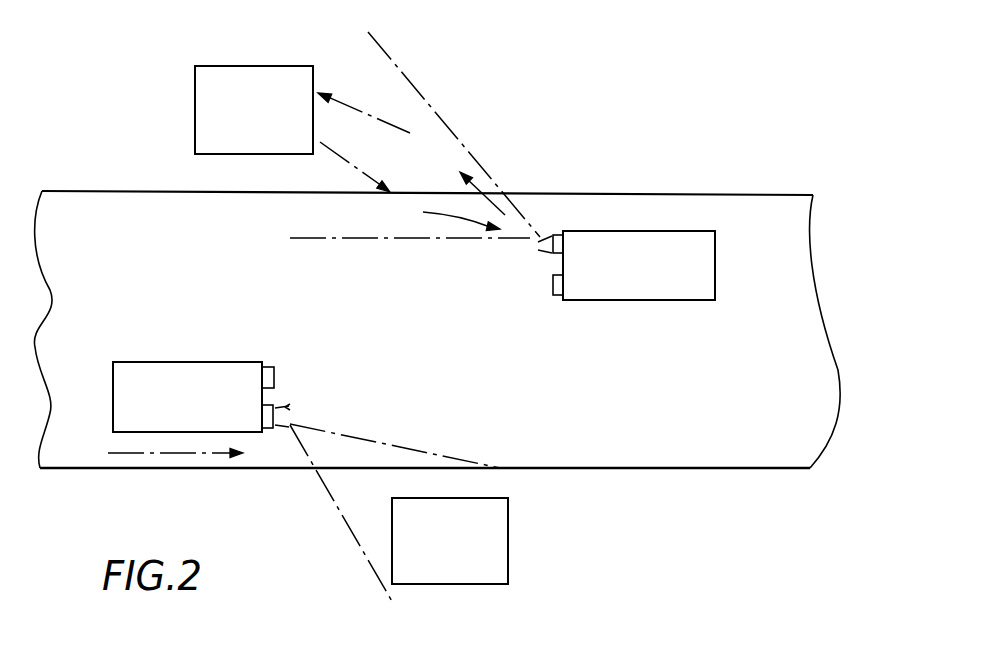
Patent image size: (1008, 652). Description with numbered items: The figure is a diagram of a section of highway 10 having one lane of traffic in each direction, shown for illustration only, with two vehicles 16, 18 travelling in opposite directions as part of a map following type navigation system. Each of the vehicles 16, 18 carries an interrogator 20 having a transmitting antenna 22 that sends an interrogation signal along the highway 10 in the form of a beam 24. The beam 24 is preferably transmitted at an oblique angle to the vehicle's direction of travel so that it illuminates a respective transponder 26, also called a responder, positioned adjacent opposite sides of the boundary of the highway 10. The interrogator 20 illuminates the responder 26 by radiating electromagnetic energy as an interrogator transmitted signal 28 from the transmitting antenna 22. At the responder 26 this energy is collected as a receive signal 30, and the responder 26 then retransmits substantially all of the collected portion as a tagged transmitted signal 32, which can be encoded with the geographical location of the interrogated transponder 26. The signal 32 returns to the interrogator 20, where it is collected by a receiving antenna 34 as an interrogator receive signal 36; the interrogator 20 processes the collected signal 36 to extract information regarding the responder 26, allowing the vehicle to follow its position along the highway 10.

The highway 10 is at (632, 465).
The vehicle 16 is at (627, 231).
The vehicle 18 is at (188, 362).
The interrogator 20 is at (558, 234).
The transmitting antenna 22 is at (534, 257).
The beam 24 is at (407, 77).
The transponder 26 is at (195, 88).
The interrogator transmitted signal 28 is at (483, 177).
The receive signal 30 is at (348, 102).
The tagged transmitted signal 32 is at (333, 150).
The receiving antenna 34 is at (538, 237).
The interrogator receive signal 36 is at (455, 218).